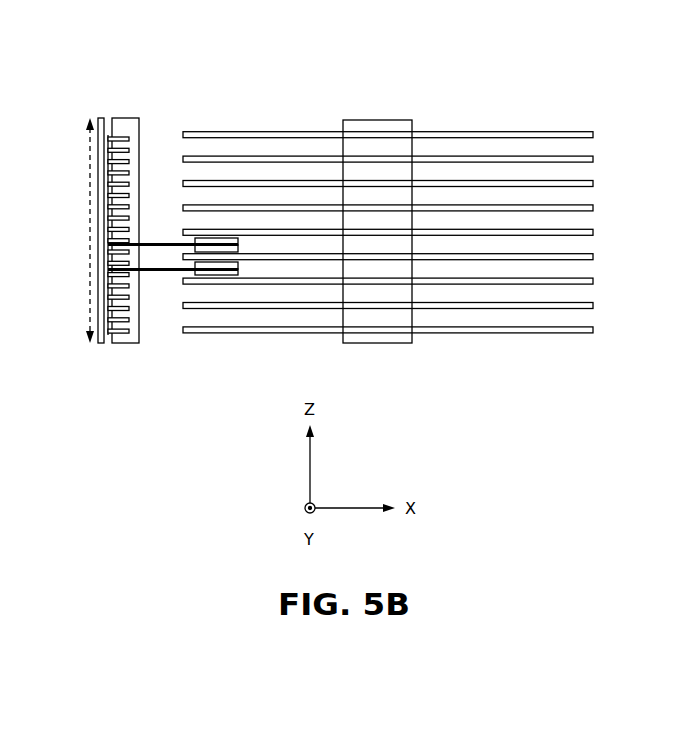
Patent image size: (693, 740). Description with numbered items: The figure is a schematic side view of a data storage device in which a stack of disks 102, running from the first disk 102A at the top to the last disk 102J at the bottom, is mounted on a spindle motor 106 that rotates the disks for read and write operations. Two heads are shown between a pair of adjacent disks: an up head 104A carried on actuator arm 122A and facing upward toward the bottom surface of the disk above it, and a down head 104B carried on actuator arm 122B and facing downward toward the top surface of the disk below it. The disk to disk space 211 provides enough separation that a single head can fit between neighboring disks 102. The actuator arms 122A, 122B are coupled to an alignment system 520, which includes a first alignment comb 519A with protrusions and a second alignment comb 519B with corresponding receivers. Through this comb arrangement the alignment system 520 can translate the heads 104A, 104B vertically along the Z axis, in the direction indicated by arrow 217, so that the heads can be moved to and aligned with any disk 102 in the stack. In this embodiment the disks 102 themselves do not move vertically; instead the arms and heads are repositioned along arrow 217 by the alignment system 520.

The disks 102 is at (432, 182).
The disk 102A is at (593, 135).
The disk 102J is at (595, 332).
The up head 104A is at (227, 266).
The down head 104B is at (226, 242).
The spindle motor 106 is at (392, 120).
The actuator arm 122A is at (157, 295).
The actuator arm 122B is at (157, 232).
The disk to disk space 211 is at (600, 235).
The arrow 217 is at (90, 148).
The first alignment comb 519A is at (100, 118).
The second alignment comb 519B is at (135, 118).
The alignment system 520 is at (120, 367).